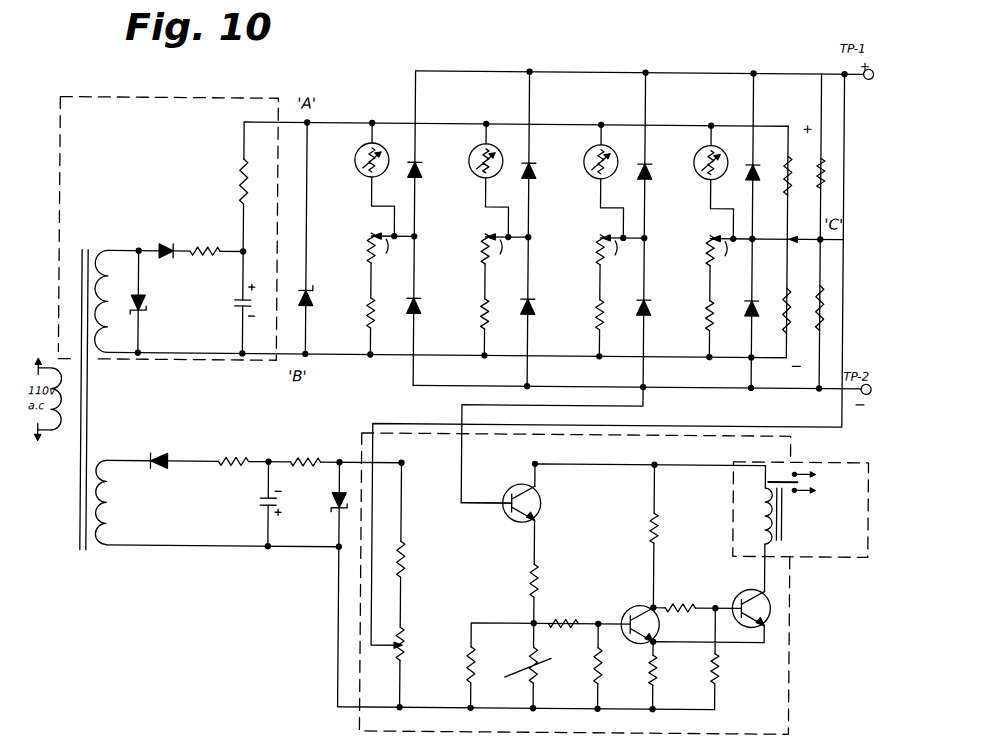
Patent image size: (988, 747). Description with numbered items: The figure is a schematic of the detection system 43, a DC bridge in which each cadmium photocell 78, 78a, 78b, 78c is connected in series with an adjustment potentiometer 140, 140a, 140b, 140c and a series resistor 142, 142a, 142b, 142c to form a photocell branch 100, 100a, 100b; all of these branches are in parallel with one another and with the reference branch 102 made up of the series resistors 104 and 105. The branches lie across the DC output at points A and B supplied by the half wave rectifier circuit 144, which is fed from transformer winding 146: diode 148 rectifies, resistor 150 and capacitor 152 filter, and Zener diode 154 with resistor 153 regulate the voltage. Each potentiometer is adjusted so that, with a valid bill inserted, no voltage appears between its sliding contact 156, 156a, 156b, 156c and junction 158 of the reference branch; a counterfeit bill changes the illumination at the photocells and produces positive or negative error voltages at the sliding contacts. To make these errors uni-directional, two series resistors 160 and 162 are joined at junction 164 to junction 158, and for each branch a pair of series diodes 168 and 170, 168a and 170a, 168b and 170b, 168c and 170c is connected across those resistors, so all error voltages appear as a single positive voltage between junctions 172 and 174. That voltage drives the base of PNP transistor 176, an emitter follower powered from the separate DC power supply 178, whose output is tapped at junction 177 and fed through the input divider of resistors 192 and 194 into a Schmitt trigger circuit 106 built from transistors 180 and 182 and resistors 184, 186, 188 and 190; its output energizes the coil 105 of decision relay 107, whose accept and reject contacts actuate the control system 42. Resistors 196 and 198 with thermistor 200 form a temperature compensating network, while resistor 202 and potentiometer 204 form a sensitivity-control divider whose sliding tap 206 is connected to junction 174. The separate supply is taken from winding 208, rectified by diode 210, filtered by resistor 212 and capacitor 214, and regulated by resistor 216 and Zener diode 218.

The control system 42 is at (800, 530).
The detection system 43 is at (243, 623).
The photocell 78 is at (356, 163).
The photocell 78a is at (474, 145).
The photocell 78b is at (606, 145).
The photocell 78c is at (718, 145).
The photocell branch 100 is at (361, 249).
The photocell branch 100a is at (477, 228).
The photocell branch 100b is at (591, 232).
The reference branch 102 is at (773, 192).
The resistor 104 is at (780, 226).
The coil 105 is at (786, 318).
The trigger circuit 106 is at (574, 583).
The decision relay 107 is at (799, 505).
The adjustment potentiometer 140 is at (370, 232).
The adjustment potentiometer 140a is at (482, 240).
The adjustment potentiometer 140b is at (597, 245).
The adjustment potentiometer 140c is at (710, 233).
The series resistor 142 is at (366, 310).
The series resistor 142a is at (482, 308).
The series resistor 142b is at (597, 312).
The series resistor 142c is at (705, 312).
The half wave rectifier circuit 144 is at (210, 331).
The transformer winding 146 is at (110, 242).
The diode 148 is at (180, 242).
The resistor 150 is at (222, 249).
The capacitor 152 is at (240, 298).
The resistor 153 is at (237, 179).
The Zener diode 154 is at (312, 285).
The sliding contact 156 is at (390, 253).
The sliding contact 156a is at (508, 254).
The sliding contact 156b is at (622, 258).
The sliding contact 156c is at (731, 262).
The junction 158 is at (787, 242).
The resistor 160 is at (825, 308).
The resistor 162 is at (830, 170).
The junction 164 is at (822, 241).
The diode 168 is at (417, 308).
The diode 168a is at (533, 305).
The diode 168b is at (652, 313).
The diode 168c is at (747, 321).
The diode 170 is at (418, 175).
The diode 170a is at (528, 178).
The diode 170b is at (645, 173).
The diode 170c is at (755, 173).
The junction 172 is at (825, 73).
The junction 174 is at (530, 390).
The PNP transistor 176 is at (522, 524).
The junction 177 is at (530, 622).
The DC power supply 178 is at (322, 543).
The transistor 180 is at (637, 602).
The transistor 182 is at (752, 595).
The resistor 184 is at (658, 527).
The resistor 186 is at (680, 595).
The resistor 188 is at (720, 677).
The resistor 190 is at (657, 677).
The resistor 192 is at (577, 623).
The resistor 194 is at (605, 673).
The resistor 196 is at (468, 675).
The resistor 198 is at (528, 588).
The thermistor 200 is at (540, 673).
The resistor 202 is at (404, 568).
The potentiometer 204 is at (405, 640).
The sliding tap 206 is at (376, 641).
The winding 208 is at (105, 460).
The diode 210 is at (166, 458).
The resistor 212 is at (250, 451).
The capacitor 214 is at (263, 508).
The resistor 216 is at (310, 455).
The Zener diode 218 is at (334, 497).